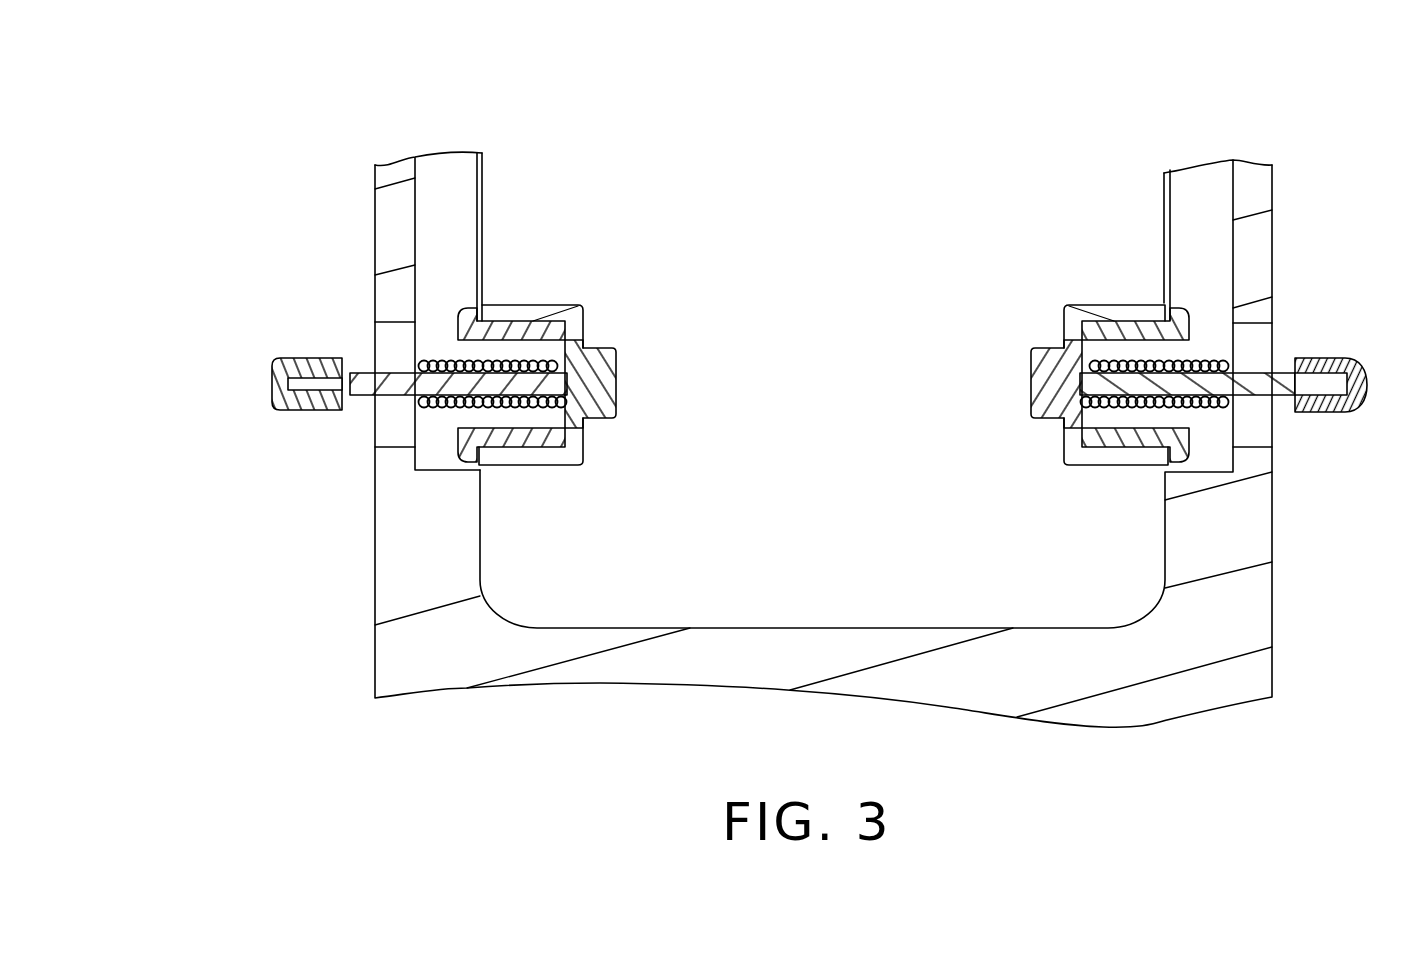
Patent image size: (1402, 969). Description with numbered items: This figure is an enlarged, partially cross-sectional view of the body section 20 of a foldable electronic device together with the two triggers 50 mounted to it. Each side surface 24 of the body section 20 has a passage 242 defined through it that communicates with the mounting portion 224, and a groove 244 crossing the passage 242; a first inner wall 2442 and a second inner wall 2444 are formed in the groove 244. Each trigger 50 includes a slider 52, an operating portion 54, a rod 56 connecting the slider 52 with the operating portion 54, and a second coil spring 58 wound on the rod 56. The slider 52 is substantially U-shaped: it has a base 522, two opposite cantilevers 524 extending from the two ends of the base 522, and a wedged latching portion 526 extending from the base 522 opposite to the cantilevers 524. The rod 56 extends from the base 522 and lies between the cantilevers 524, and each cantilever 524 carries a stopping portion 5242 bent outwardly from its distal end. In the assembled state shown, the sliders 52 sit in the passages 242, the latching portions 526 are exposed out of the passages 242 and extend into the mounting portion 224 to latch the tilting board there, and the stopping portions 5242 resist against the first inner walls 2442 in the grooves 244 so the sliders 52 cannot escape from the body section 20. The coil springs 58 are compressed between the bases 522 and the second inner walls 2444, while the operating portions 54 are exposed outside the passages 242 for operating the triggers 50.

The body section 20 is at (1167, 703).
The side surface 24 is at (398, 232).
The passage 242 is at (396, 343).
The groove 244 is at (450, 173).
The first inner wall 2442 is at (482, 233).
The second inner wall 2444 is at (415, 222).
The mounting portion 224 is at (828, 252).
The trigger 50 is at (193, 395).
The slider 52 is at (587, 397).
The operating portion 54 is at (280, 399).
The rod 56 is at (368, 398).
The second coil spring 58 is at (437, 405).
The base 522 is at (1060, 332).
The cantilever 524 is at (1113, 325).
The latching portion 526 is at (1047, 385).
The stopping portion 5242 is at (1173, 310).